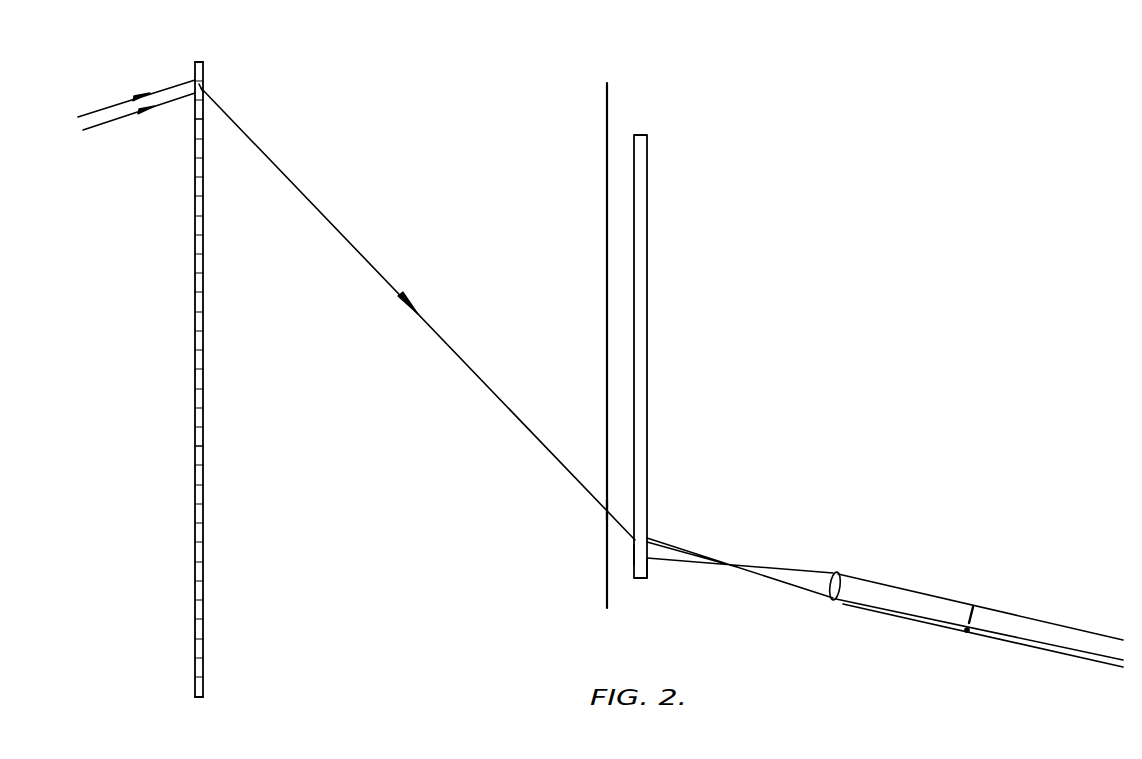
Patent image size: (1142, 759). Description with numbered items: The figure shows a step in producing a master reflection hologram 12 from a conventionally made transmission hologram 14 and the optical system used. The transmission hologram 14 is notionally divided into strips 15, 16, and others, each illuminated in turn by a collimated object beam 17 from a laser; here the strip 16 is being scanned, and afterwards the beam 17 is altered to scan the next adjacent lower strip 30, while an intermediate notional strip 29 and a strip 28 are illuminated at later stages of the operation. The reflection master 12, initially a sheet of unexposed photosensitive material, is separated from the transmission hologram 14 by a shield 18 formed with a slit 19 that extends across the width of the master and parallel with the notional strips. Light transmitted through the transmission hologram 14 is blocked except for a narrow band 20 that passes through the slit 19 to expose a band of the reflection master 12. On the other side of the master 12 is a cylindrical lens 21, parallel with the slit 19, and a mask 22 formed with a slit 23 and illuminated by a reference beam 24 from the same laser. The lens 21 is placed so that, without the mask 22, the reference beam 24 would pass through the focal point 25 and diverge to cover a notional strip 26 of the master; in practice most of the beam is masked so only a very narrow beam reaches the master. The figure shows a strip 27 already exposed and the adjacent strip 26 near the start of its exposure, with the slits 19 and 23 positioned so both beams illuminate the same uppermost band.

The reflection hologram 12 is at (648, 182).
The transmission hologram 14 is at (203, 344).
The strip of transmission hologram 15 is at (203, 70).
The strip of transmission hologram 16 is at (204, 89).
The collimated object beam 17 is at (110, 105).
The shield 18 is at (607, 233).
The slit 19 is at (606, 509).
The narrow band of light 20 is at (365, 259).
The cylindrical lens 21 is at (843, 572).
The mask 22 is at (975, 610).
The slit 23 is at (967, 633).
The reference beam 24 is at (1060, 637).
The focal point 25 is at (738, 563).
The notional strip of reflection master 26 is at (637, 553).
The notional strip of reflection master 27 is at (648, 571).
The strip of transmission hologram 28 is at (203, 685).
The intermediate notional strip 29 is at (203, 446).
The next adjacent lower strip 30 is at (193, 112).